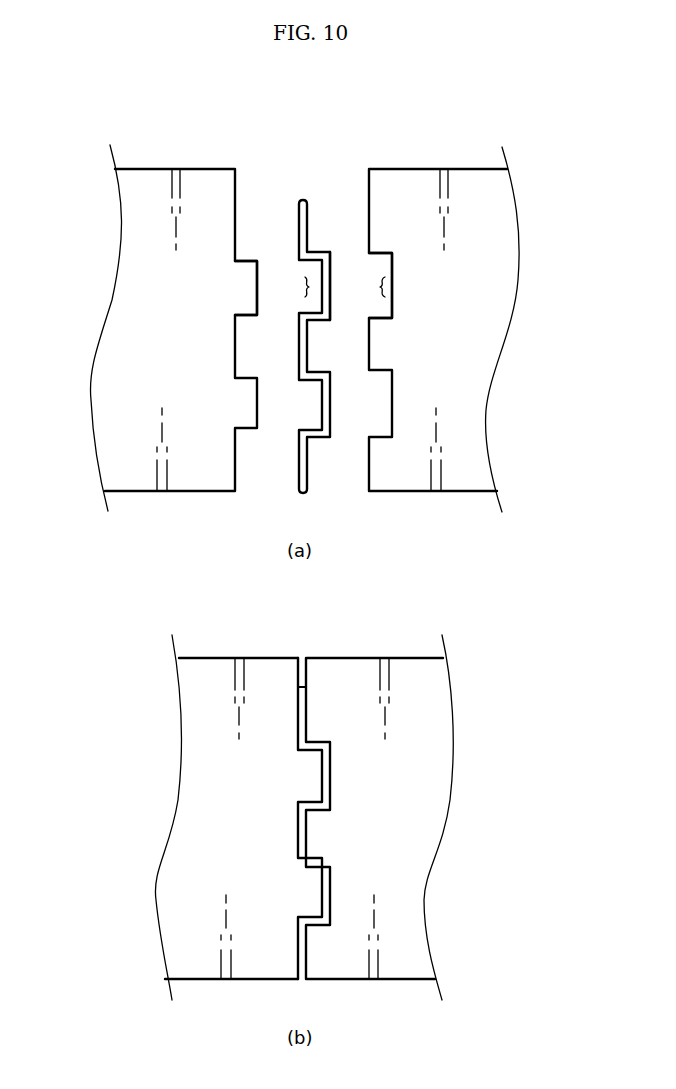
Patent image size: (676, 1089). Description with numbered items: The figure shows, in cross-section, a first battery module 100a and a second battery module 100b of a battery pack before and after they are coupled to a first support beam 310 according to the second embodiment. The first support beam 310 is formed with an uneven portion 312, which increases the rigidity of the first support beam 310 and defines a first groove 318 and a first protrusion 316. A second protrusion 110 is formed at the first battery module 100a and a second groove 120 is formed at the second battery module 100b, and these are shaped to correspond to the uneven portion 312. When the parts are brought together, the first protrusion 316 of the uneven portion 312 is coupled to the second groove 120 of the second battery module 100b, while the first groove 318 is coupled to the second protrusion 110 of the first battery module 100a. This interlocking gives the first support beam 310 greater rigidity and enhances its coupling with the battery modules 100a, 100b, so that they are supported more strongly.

The first battery module 100a is at (225, 232).
The second battery module 100b is at (382, 220).
The second protrusion 110 is at (248, 278).
The second groove 120 is at (386, 288).
The first support beam 310 is at (420, 531).
The uneven portion 312 is at (299, 190).
The first protrusion 316 is at (333, 268).
The first groove 318 is at (302, 287).